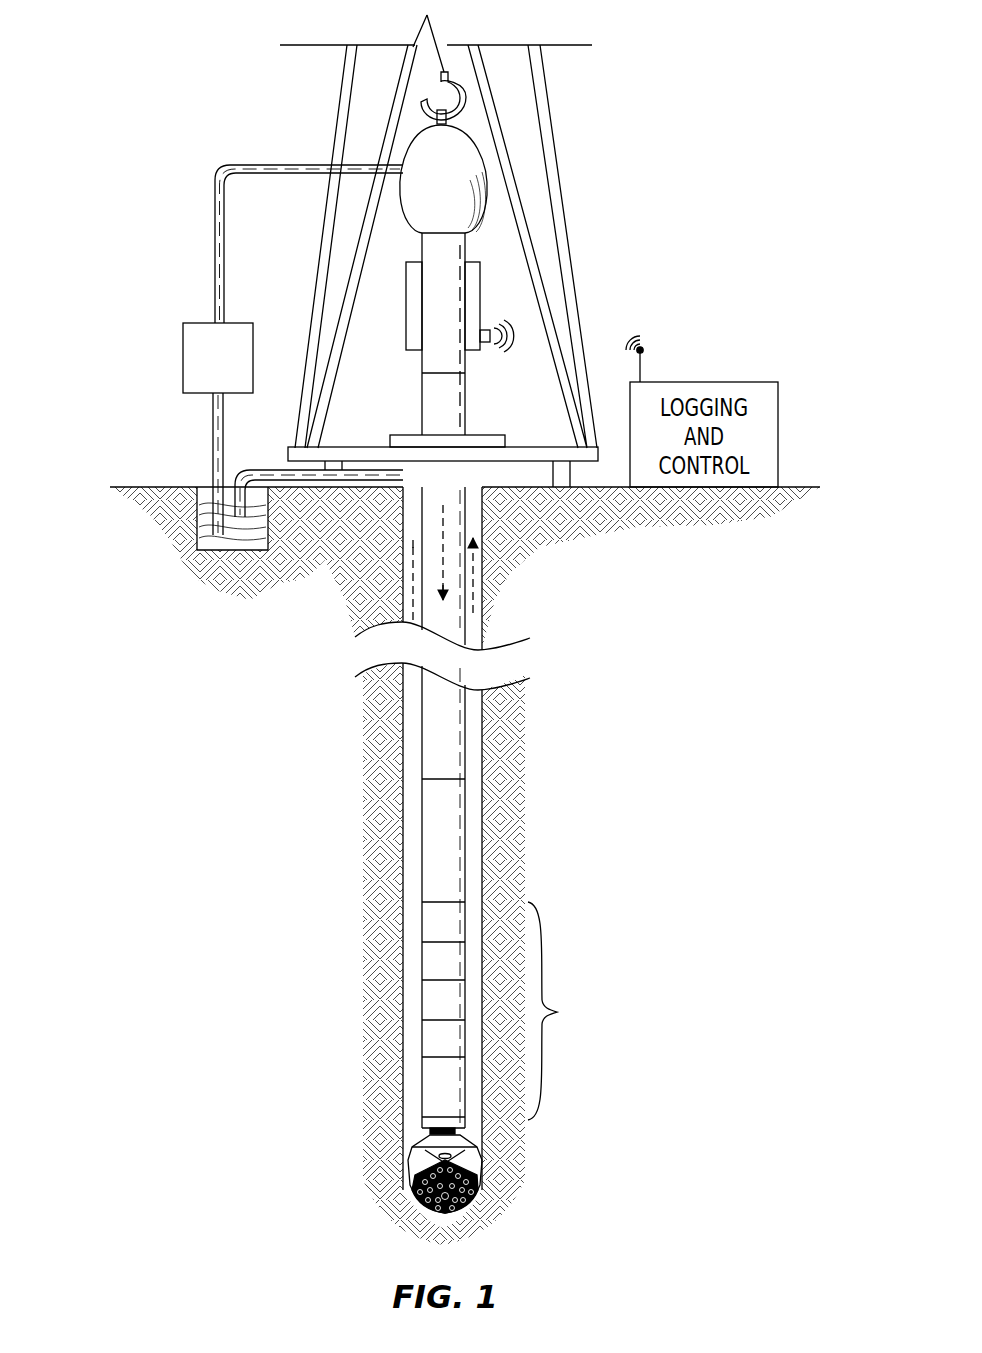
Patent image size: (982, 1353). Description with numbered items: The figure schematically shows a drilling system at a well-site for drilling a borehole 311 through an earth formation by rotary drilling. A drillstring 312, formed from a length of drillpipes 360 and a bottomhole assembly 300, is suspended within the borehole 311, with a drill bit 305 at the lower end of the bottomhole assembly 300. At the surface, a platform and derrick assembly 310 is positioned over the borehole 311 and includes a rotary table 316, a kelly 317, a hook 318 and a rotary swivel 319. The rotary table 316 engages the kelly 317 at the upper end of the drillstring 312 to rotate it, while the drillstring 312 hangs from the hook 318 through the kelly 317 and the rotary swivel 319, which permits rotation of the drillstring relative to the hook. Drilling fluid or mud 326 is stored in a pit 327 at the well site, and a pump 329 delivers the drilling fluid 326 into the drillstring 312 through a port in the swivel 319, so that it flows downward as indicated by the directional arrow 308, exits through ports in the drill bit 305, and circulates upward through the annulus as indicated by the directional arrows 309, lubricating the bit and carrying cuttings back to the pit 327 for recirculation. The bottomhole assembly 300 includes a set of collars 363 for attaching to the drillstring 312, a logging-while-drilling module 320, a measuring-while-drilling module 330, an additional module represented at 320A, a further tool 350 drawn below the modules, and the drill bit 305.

The bottomhole assembly 300 is at (566, 1011).
The drill bit 305 is at (415, 1165).
The directional arrow 308 is at (428, 577).
The directional arrows 309 is at (407, 550).
The platform and derrick assembly 310 is at (572, 140).
The borehole 311 is at (480, 500).
The drillstring 312 is at (443, 488).
The rotary table 316 is at (488, 442).
The kelly 317 is at (428, 392).
The hook 318 is at (440, 70).
The rotary swivel 319 is at (417, 208).
The logging-while-drilling module 320 is at (428, 963).
The additional LWD and/or MWD module 320A is at (428, 1040).
The drilling fluid or mud 326 is at (232, 545).
The pit 327 is at (207, 498).
The pump 329 is at (197, 395).
The measuring-while-drilling module 330 is at (428, 1003).
The steering tool 350 is at (428, 1087).
The drillpipes 360 is at (430, 750).
The collars 363 is at (428, 920).